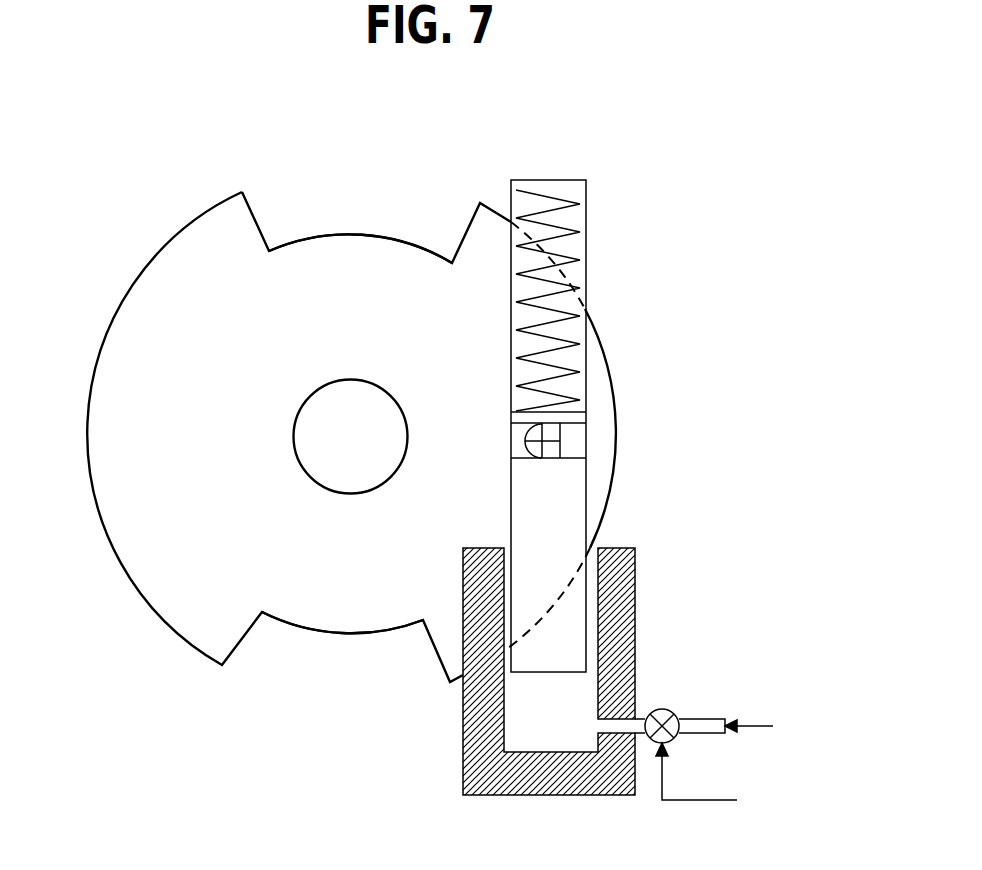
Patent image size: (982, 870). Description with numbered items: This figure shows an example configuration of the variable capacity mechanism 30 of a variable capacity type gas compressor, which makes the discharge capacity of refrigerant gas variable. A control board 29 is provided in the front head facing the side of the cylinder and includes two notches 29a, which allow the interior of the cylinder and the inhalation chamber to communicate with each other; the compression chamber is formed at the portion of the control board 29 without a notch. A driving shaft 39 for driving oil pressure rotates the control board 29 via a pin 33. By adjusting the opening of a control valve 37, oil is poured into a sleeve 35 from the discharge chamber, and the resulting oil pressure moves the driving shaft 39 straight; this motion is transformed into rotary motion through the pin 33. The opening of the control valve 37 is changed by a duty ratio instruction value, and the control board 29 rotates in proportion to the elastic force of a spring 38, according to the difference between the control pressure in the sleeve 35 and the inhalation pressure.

The variable capacity mechanism 30 is at (370, 118).
The control board 29 is at (152, 287).
The notches 29a is at (362, 238).
The spring 38 is at (583, 223).
The pin 33 is at (560, 441).
The driving shaft 39 is at (570, 506).
The sleeve 35 is at (628, 606).
The control valve 37 is at (670, 710).